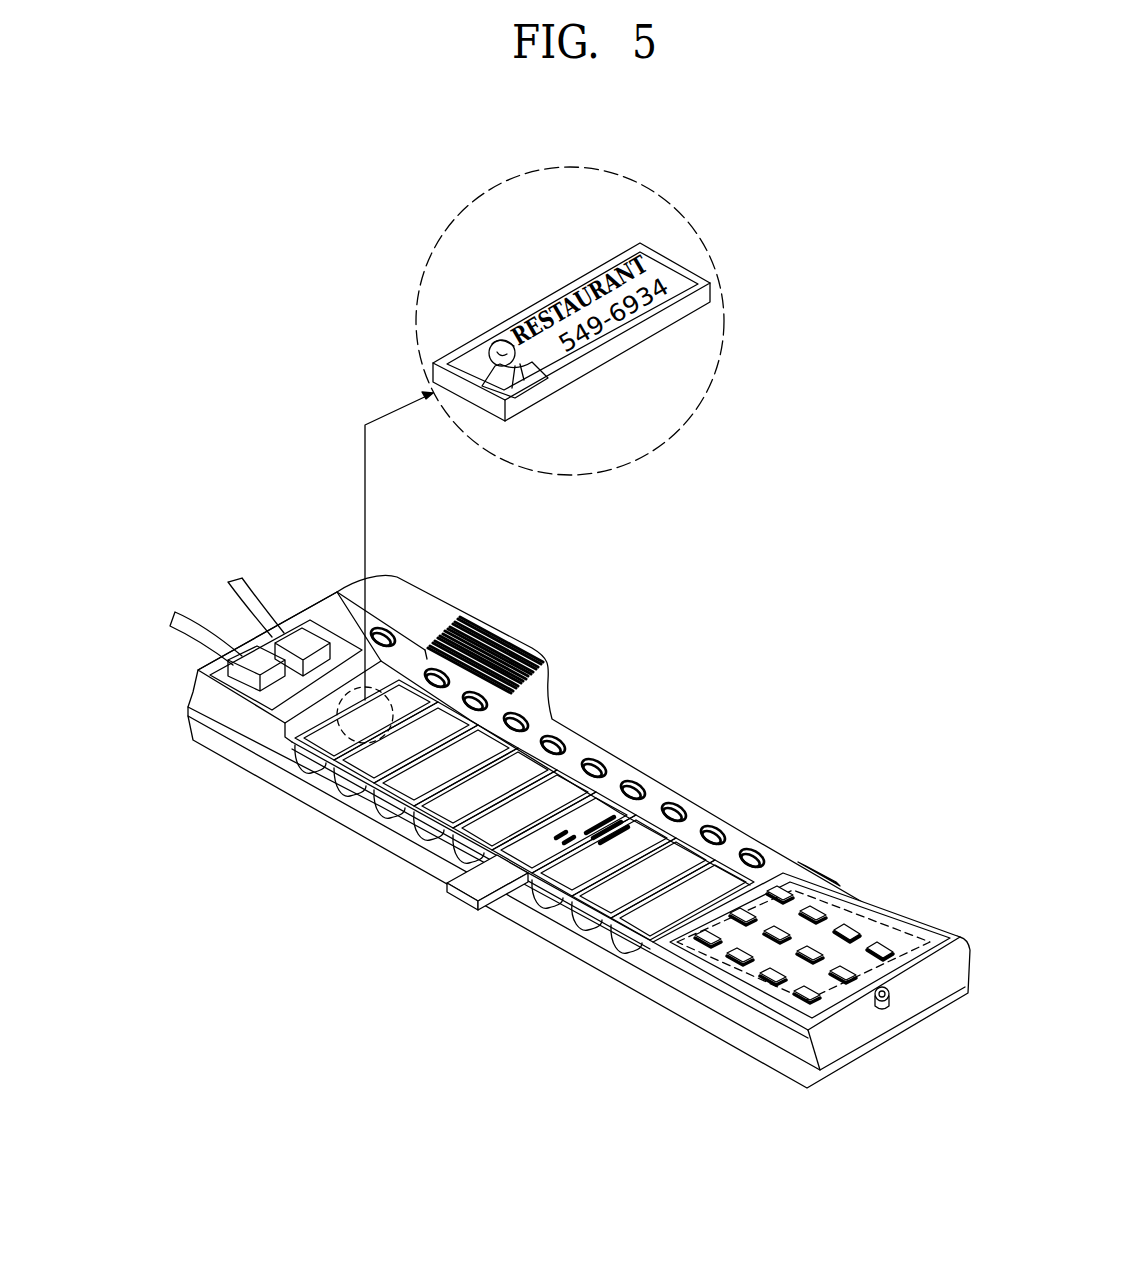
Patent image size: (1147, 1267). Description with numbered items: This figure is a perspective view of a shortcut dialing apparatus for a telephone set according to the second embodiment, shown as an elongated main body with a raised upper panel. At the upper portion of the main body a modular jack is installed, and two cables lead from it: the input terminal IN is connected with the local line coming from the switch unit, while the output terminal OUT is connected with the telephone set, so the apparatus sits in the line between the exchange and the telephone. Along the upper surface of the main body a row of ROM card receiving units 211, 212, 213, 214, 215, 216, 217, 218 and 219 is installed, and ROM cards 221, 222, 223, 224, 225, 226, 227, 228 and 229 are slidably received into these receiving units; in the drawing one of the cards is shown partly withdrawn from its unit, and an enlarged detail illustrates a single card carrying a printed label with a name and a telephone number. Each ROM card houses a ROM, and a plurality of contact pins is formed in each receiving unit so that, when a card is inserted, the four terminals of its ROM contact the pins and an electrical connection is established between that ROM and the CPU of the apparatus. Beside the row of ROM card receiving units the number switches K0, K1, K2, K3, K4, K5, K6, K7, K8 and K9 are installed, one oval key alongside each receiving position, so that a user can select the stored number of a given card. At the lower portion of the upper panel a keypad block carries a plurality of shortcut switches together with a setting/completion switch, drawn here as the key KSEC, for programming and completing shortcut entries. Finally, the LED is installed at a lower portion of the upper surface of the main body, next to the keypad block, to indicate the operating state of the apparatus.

The number switch K0 is at (390, 629).
The number switch K1 is at (444, 670).
The number switch K2 is at (483, 693).
The number switch K3 is at (527, 716).
The number switch K4 is at (566, 742).
The number switch K5 is at (607, 767).
The number switch K6 is at (647, 789).
The number switch K7 is at (687, 811).
The number switch K8 is at (727, 834).
The number switch K9 is at (766, 857).
The ROM card receiving unit 211 is at (404, 678).
The ROM card receiving unit 212 is at (444, 702).
The ROM card receiving unit 213 is at (485, 725).
The ROM card receiving unit 214 is at (526, 748).
The ROM card receiving unit 215 is at (565, 770).
The ROM card receiving unit 216 is at (605, 793).
The ROM card receiving unit 217 is at (645, 815).
The ROM card receiving unit 218 is at (685, 838).
The ROM card receiving unit 219 is at (806, 868).
The ROM card 221 is at (296, 750).
The ROM card 222 is at (334, 774).
The ROM card 223 is at (374, 796).
The ROM card 224 is at (414, 818).
The ROM card 225 is at (453, 841).
The ROM card 226 is at (458, 896).
The ROM card 227 is at (531, 888).
The ROM card 228 is at (570, 910).
The ROM card 229 is at (610, 932).
The security key KSEC is at (800, 996).
The element LED is at (889, 999).
The input terminal IN is at (203, 639).
The output terminal OUT is at (268, 607).